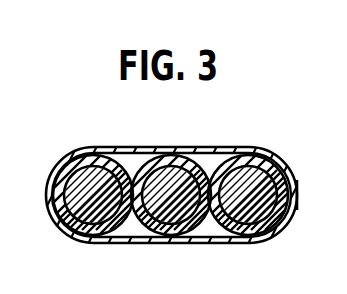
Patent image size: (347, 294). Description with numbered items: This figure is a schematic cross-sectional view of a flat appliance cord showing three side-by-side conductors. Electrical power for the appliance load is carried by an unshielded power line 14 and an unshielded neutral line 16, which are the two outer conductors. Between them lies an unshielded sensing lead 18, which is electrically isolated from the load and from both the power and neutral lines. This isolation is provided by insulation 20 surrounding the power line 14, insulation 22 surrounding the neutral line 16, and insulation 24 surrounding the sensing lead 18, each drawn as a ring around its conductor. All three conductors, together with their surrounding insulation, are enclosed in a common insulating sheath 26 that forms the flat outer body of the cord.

The power line 14 is at (94, 216).
The neutral line 16 is at (257, 201).
The sensing lead 18 is at (184, 201).
The insulation 20 is at (118, 156).
The insulation 22 is at (272, 160).
The insulation 24 is at (196, 166).
The insulating sheath 26 is at (297, 195).